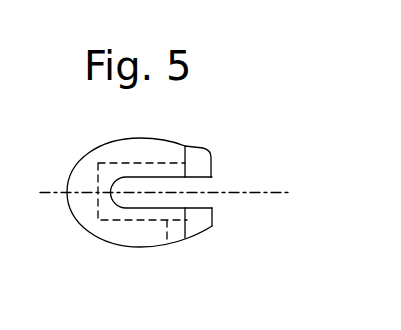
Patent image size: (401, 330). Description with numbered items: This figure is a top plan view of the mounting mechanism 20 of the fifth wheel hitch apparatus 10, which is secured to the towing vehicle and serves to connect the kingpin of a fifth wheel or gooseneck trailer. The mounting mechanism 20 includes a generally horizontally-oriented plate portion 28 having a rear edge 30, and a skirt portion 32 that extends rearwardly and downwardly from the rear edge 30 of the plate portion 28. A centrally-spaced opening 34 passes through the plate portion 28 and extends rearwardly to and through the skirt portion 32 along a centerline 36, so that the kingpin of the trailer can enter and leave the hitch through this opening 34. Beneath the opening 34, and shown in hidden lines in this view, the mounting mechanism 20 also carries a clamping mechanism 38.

The fifth wheel hitch apparatus 10 is at (249, 97).
The mounting mechanism 20 is at (74, 120).
The plate portion 28 is at (148, 140).
The rear edge 30 is at (188, 157).
The skirt portion 32 is at (212, 225).
The opening 34 is at (256, 182).
The centerline 36 is at (253, 193).
The clamping mechanism 38 is at (130, 221).